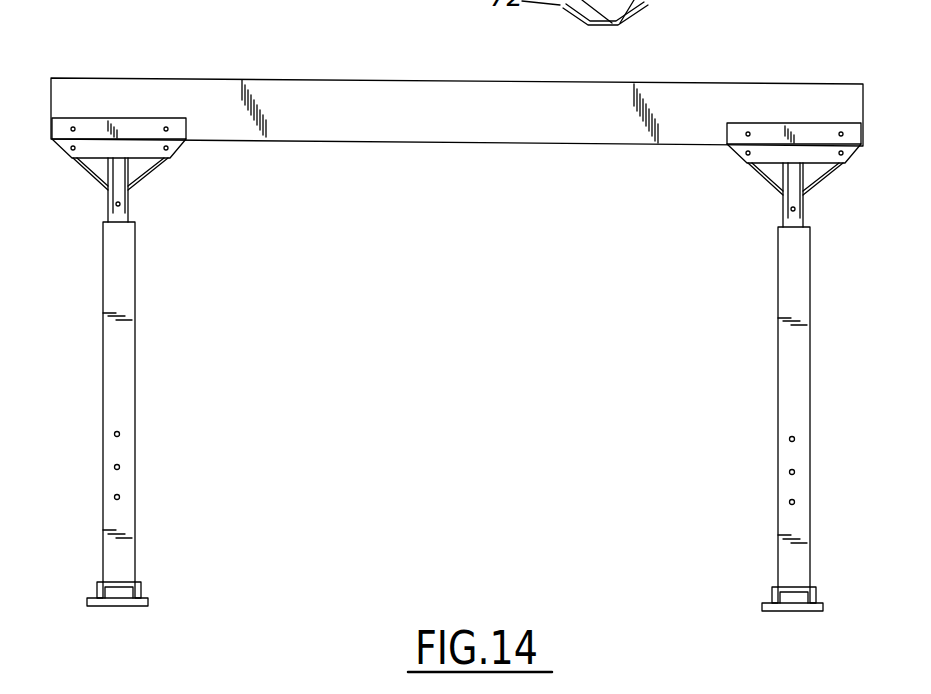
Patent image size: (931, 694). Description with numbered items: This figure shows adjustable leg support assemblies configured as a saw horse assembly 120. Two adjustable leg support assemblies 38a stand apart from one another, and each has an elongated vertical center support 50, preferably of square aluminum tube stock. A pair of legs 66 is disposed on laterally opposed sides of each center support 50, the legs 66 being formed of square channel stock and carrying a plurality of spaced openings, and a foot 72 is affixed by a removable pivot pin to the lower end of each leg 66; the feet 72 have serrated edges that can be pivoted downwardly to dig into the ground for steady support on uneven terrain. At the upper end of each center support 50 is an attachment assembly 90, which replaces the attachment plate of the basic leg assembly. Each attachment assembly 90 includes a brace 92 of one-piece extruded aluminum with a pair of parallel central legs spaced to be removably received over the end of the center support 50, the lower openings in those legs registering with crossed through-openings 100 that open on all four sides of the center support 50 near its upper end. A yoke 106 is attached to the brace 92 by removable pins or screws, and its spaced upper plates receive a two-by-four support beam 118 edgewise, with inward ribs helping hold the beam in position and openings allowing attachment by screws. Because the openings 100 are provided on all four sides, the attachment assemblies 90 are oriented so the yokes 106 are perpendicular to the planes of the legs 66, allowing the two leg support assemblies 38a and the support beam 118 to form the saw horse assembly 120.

The saw horse assembly 120 is at (462, 305).
The support beam 118 is at (322, 87).
The yoke 106 is at (112, 130).
The attachment assembly 90 is at (66, 163).
The brace 92 is at (150, 172).
The crossed through-openings 100 is at (120, 204).
The center support 50 is at (118, 223).
The leg 66 is at (429, 404).
The adjustable leg support assembly 38a is at (462, 404).
The foot 72 is at (143, 598).